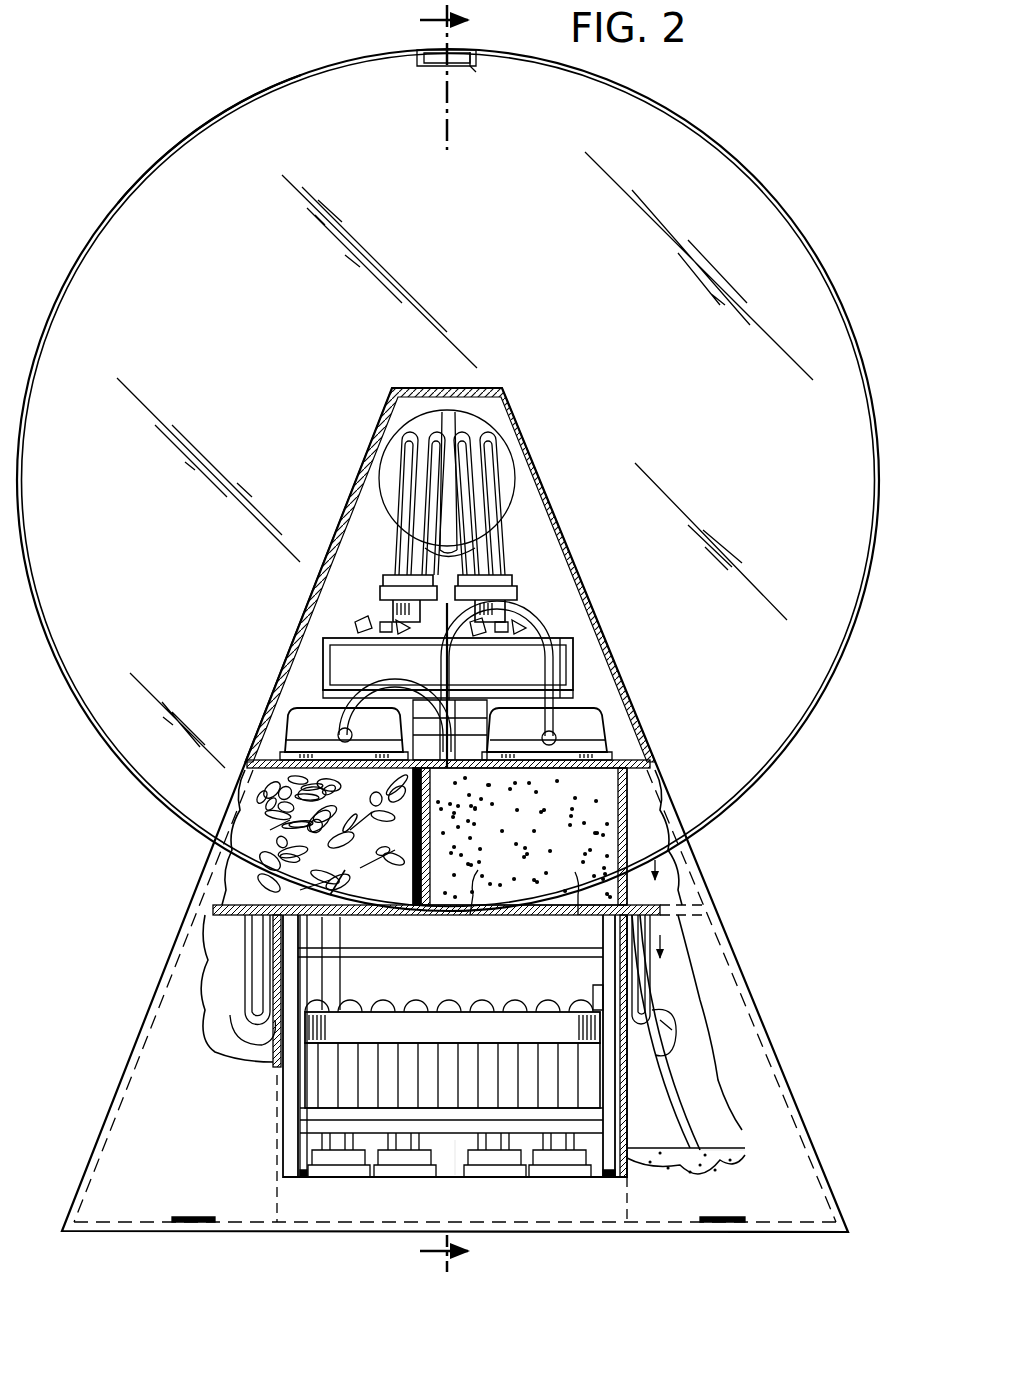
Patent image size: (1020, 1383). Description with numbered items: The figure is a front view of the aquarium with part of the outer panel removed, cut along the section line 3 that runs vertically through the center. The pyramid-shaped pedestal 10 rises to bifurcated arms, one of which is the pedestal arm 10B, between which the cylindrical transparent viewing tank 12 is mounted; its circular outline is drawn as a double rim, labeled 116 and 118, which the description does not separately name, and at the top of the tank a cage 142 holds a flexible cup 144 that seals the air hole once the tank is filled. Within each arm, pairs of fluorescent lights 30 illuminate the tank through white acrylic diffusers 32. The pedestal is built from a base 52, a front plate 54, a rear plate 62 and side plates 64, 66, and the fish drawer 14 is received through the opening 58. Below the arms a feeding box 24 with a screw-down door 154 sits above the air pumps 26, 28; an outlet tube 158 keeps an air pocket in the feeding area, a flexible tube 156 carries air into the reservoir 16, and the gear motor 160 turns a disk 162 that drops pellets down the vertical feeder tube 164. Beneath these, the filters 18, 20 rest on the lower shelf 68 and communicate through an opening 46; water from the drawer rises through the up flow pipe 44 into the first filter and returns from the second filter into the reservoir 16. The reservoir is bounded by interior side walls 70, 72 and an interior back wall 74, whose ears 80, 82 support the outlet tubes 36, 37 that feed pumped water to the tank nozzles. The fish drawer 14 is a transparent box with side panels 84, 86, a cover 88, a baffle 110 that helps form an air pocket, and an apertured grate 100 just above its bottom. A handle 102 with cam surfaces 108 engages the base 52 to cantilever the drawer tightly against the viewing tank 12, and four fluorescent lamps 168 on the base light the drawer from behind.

The section line 3- 3 is at (431, 638).
The pyramid-shaped pedestal 10 is at (755, 1002).
The pedestal arm 10B is at (575, 625).
The cylindrical transparent viewing tank 12 is at (728, 150).
The fish drawer 14 is at (297, 1118).
The reservoir 16 is at (705, 1136).
The filter 18 is at (272, 808).
The filter 20 is at (500, 915).
The feeding box 24 is at (580, 687).
The air pump 26 is at (290, 728).
The air pump 28 is at (603, 737).
The fluorescent lights 30 is at (398, 556).
The white acrylic diffusers 32 is at (415, 422).
The outlet tube 36 is at (245, 962).
The outlet tube 37 is at (655, 978).
The up flow pipe 44 is at (330, 980).
The opening 46 is at (405, 772).
The base 52 is at (125, 1232).
The front plate 54 is at (788, 1170).
The opening 58 is at (290, 1084).
The rear plate 62 is at (700, 1075).
The side plate 64 is at (200, 953).
The side plate 66 is at (722, 948).
The lower shelf 68 is at (685, 897).
The interior side wall 70 is at (278, 1162).
The interior side wall 72 is at (686, 1145).
The interior back wall 74 is at (463, 1198).
The ear 80 is at (232, 1020).
The ear 82 is at (666, 1032).
The side panel 84 is at (320, 947).
The side panel 86 is at (600, 965).
The cover 88 is at (564, 882).
The apertured grate 100 is at (473, 1105).
The handle 102 is at (518, 1028).
The cam surfaces 108 is at (303, 1185).
The baffle 110 is at (405, 1012).
The outer reflector rim 116 is at (205, 140).
The inner reflector rim 118 is at (635, 92).
The cage 142 is at (465, 58).
The flexible cup 144 is at (425, 58).
The door 154 is at (372, 618).
The flexible tube 156 is at (490, 877).
The outlet tube 158 is at (450, 672).
The gear motor 160 is at (480, 737).
The disk 162 is at (422, 678).
The vertical feeder tube 164 is at (605, 840).
The fluorescent lamps 168 is at (362, 1205).